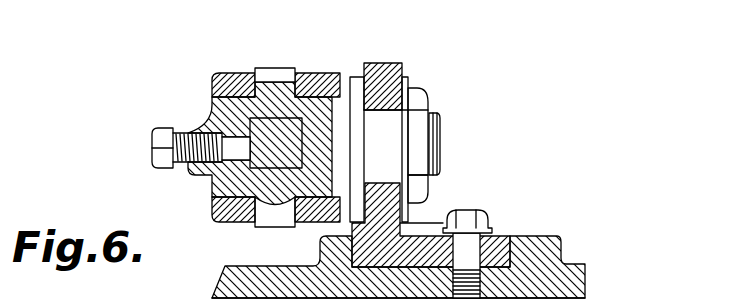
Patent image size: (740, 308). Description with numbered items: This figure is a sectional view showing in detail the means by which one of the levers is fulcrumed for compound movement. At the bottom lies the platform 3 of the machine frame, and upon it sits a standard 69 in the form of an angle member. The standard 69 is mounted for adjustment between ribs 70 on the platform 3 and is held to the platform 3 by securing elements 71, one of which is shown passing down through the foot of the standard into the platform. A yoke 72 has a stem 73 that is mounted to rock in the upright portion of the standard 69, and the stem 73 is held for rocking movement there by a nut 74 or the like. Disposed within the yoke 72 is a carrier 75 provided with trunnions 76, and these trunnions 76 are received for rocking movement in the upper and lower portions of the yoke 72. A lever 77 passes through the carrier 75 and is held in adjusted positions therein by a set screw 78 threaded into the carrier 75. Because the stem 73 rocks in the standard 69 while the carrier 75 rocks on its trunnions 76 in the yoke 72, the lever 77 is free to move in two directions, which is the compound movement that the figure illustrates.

The platform 3 is at (585, 284).
The standard 69 is at (388, 63).
The ribs 70 is at (328, 241).
The securing elements 71 is at (485, 212).
The yoke 72 is at (312, 74).
The stem 73 is at (395, 150).
The nut 74 is at (423, 192).
The carrier 75 is at (245, 74).
The trunnions 76 is at (274, 72).
The lever 77 is at (250, 170).
The set screw 78 is at (167, 155).